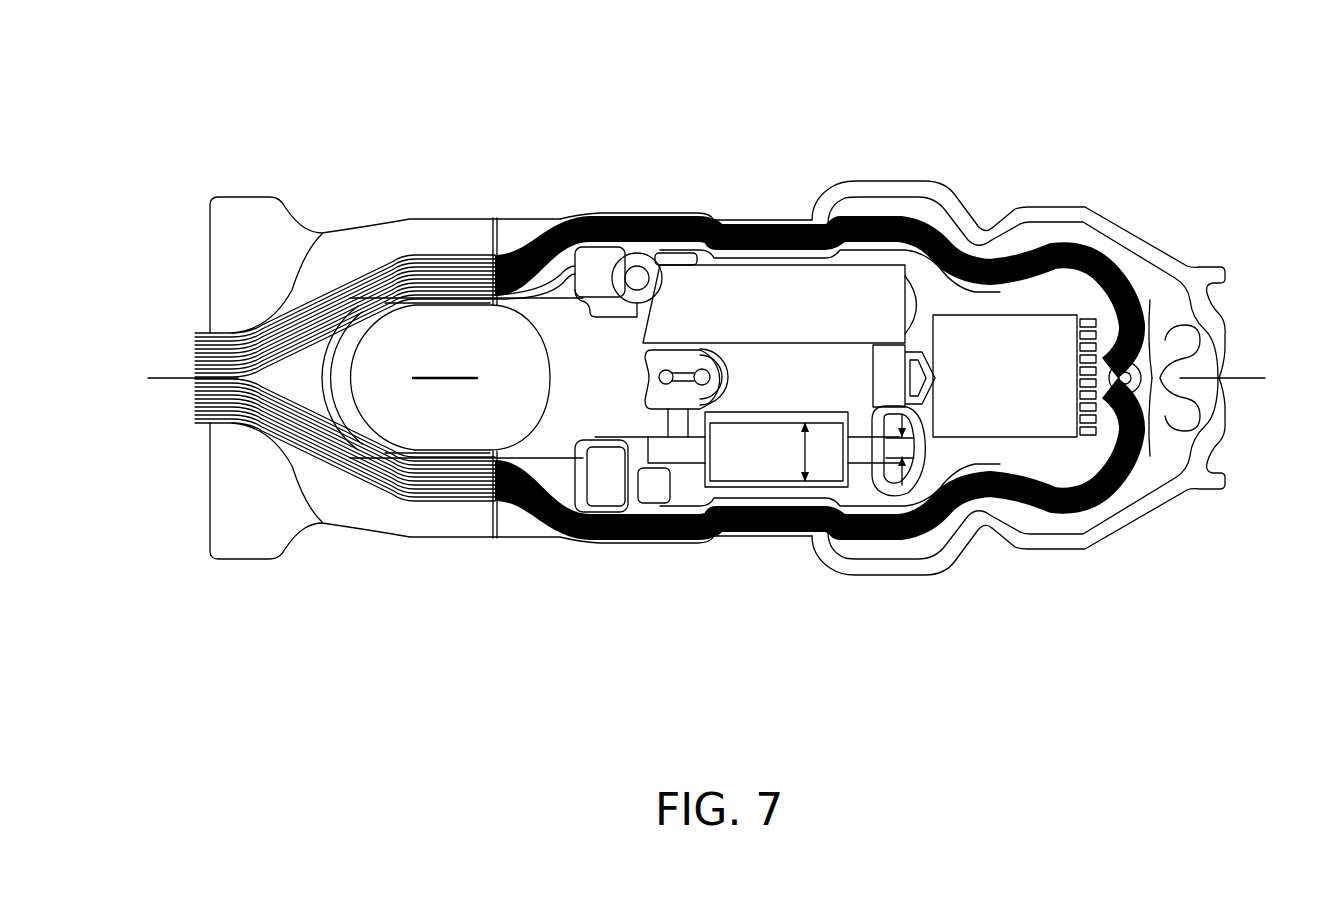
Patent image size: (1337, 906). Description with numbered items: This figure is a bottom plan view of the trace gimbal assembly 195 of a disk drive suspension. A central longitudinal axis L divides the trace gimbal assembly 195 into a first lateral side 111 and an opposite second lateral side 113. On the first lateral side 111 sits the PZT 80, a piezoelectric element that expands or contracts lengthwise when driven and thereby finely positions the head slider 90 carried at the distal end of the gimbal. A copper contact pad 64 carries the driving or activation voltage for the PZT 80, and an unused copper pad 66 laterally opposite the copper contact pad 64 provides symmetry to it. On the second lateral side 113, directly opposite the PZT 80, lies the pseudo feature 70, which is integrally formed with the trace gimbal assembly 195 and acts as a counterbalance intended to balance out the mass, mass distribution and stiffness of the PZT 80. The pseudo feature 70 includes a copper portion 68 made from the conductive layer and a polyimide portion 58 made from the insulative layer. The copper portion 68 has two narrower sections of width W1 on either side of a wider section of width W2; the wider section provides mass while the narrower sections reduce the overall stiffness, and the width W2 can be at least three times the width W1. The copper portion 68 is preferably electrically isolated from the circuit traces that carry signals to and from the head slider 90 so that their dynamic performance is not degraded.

The trace gimbal assembly 195 is at (660, 93).
The pseudo feature 70 is at (692, 598).
The first lateral side 111 is at (934, 184).
The second lateral side 113 is at (955, 562).
The copper contact pad 64 is at (613, 283).
The PZT 80 is at (812, 315).
The copper portion 68 is at (773, 467).
The unused copper pad 66 is at (622, 492).
The polyimide portion 58 is at (880, 480).
The head slider 90 is at (1025, 393).
The width of narrower sections W1 is at (906, 449).
The width of wider section W2 is at (804, 452).
The central longitudinal axis L is at (706, 379).